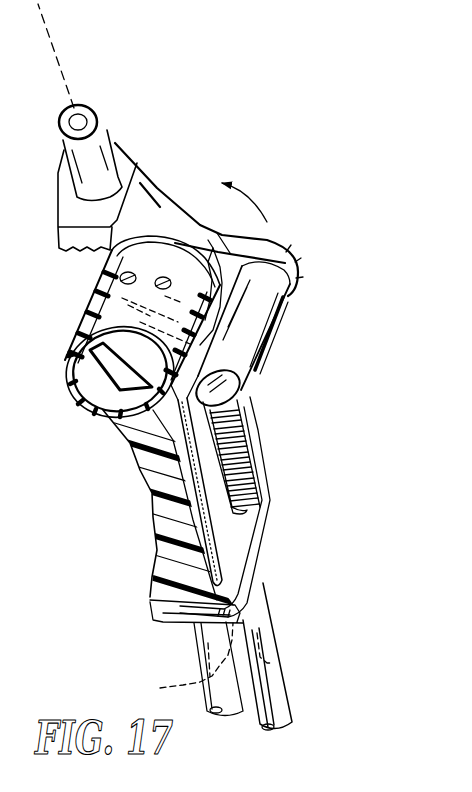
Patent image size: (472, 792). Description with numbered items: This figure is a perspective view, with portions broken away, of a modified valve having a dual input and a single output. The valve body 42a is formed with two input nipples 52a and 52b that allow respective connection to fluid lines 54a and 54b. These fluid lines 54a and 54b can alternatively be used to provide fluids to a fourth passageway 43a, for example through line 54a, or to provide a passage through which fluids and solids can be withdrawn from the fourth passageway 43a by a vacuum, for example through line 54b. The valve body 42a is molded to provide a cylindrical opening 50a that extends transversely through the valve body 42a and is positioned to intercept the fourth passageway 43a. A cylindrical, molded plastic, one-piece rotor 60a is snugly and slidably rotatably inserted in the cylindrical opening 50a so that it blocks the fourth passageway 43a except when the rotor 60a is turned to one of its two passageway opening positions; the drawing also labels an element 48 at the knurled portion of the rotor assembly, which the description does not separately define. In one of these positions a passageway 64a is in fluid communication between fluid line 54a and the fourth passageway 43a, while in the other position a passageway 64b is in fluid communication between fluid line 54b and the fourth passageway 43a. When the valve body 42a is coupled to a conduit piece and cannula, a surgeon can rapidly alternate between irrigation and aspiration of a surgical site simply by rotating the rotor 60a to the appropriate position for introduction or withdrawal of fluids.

The fourth passageway 43a is at (83, 115).
The passageway 64b is at (128, 274).
The passageway 64a is at (165, 278).
The knurled barrel 48 is at (66, 398).
The rotor 60a is at (94, 388).
The cylindrical opening 50a is at (117, 405).
The valve body 42a is at (140, 470).
The input nipple 52b is at (257, 633).
The input nipple 52a is at (178, 661).
The fluid line 54b is at (278, 705).
The fluid line 54a is at (237, 707).